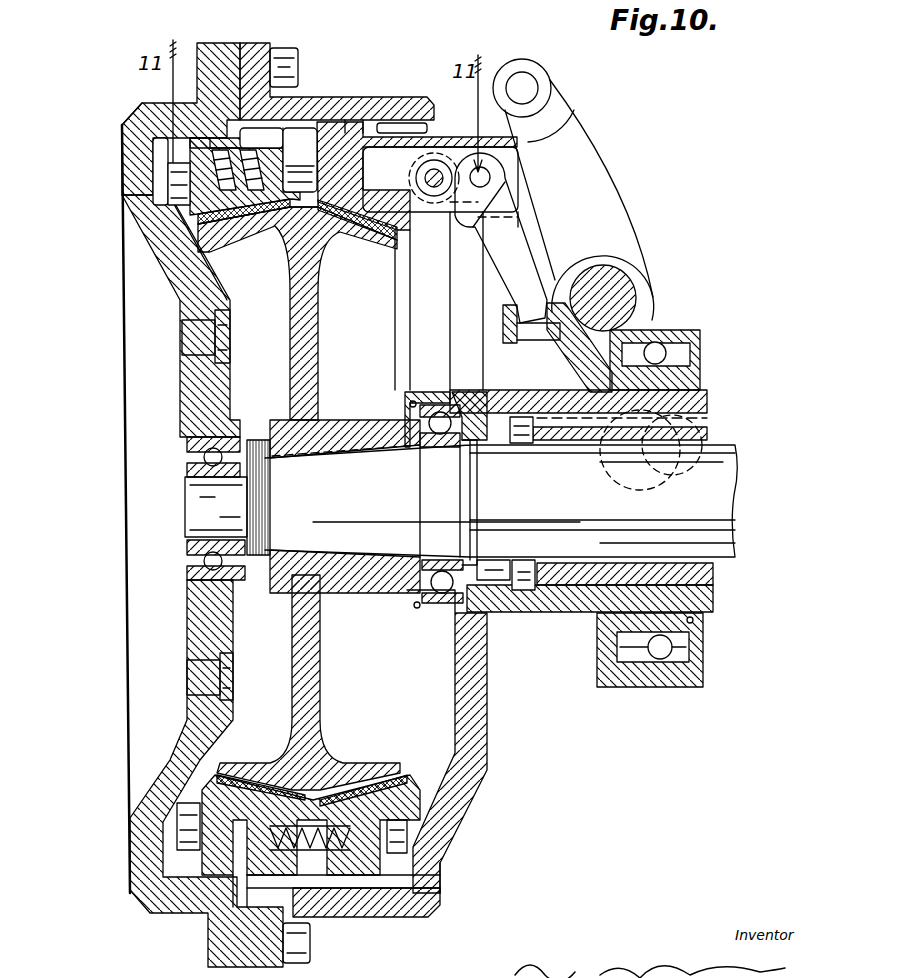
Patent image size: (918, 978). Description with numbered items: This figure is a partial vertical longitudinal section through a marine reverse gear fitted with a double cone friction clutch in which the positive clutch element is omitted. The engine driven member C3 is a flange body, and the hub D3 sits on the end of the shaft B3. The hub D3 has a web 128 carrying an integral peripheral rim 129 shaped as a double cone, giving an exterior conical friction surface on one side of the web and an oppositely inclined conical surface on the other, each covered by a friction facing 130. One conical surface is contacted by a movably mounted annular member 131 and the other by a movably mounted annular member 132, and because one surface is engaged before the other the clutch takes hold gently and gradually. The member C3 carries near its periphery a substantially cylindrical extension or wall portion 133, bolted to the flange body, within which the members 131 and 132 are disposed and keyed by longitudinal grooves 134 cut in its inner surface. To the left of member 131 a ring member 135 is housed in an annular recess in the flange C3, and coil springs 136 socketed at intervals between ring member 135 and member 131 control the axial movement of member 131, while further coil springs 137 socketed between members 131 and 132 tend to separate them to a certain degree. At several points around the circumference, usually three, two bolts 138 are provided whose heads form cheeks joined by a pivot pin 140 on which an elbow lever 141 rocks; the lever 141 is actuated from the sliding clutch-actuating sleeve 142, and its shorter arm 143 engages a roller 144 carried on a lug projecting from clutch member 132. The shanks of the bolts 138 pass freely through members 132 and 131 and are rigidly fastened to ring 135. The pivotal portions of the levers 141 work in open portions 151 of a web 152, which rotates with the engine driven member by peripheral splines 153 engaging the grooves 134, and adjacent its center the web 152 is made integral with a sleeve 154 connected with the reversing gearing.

The engine driven member C3 is at (125, 167).
The hub D3 is at (305, 328).
The shaft B3 is at (718, 481).
The web 128 is at (307, 290).
The rim 129 is at (277, 242).
The friction facing 130 is at (232, 207).
The annular member 131 is at (240, 182).
The annular member 132 is at (326, 207).
The cylindrical extension or wall portion 133 is at (400, 100).
The longitudinal grooves 134 is at (313, 127).
The ring member 135 is at (130, 120).
The coil springs 136 is at (250, 150).
The coil springs 137 is at (318, 855).
The bolts 138 is at (295, 172).
The pivot pin 140 is at (405, 177).
The lever 141 is at (503, 232).
The sliding clutch-actuating sleeve 142 is at (610, 376).
The shorter arm 143 is at (477, 210).
The roller 144 is at (420, 178).
The open portions 151 is at (510, 163).
The web 152 is at (472, 705).
The peripheral splines 153 is at (442, 865).
The sleeve 154 is at (582, 600).